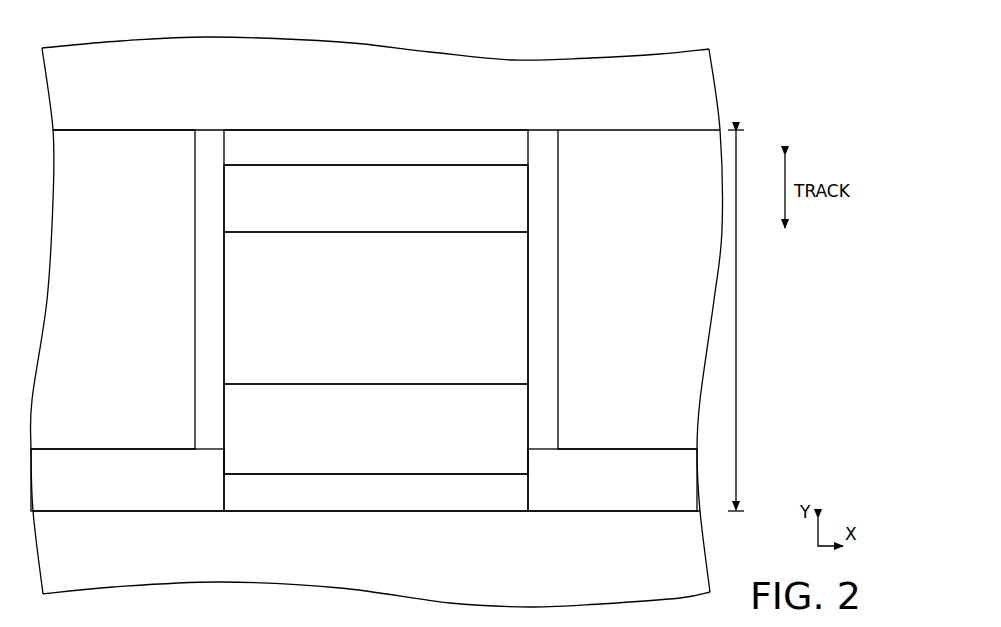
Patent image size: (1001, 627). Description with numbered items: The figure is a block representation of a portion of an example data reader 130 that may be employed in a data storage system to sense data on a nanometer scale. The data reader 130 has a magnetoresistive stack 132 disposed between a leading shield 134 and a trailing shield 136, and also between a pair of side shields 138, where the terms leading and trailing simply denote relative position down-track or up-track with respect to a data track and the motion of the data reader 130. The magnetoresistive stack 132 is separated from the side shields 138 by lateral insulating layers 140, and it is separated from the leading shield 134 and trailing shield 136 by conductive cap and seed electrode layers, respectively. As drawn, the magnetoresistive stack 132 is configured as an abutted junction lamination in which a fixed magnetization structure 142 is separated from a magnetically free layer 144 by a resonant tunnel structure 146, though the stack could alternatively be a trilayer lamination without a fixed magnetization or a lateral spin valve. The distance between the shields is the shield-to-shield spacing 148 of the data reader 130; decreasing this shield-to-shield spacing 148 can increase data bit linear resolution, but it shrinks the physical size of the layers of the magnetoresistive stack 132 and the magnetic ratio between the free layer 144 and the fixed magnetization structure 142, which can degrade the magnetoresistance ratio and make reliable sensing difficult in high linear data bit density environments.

The data reader 130 is at (726, 42).
The magnetoresistive stack 132 is at (521, 146).
The leading shield 134 is at (76, 542).
The trailing shield 136 is at (86, 70).
The side shield 138 is at (76, 443).
The lateral insulating layer 140 is at (144, 493).
The fixed magnetization structure 142 is at (269, 441).
The magnetically free layer 144 is at (269, 206).
The resonant tunnel structure 146 is at (269, 319).
The shield-to-shield spacing 148 is at (754, 320).